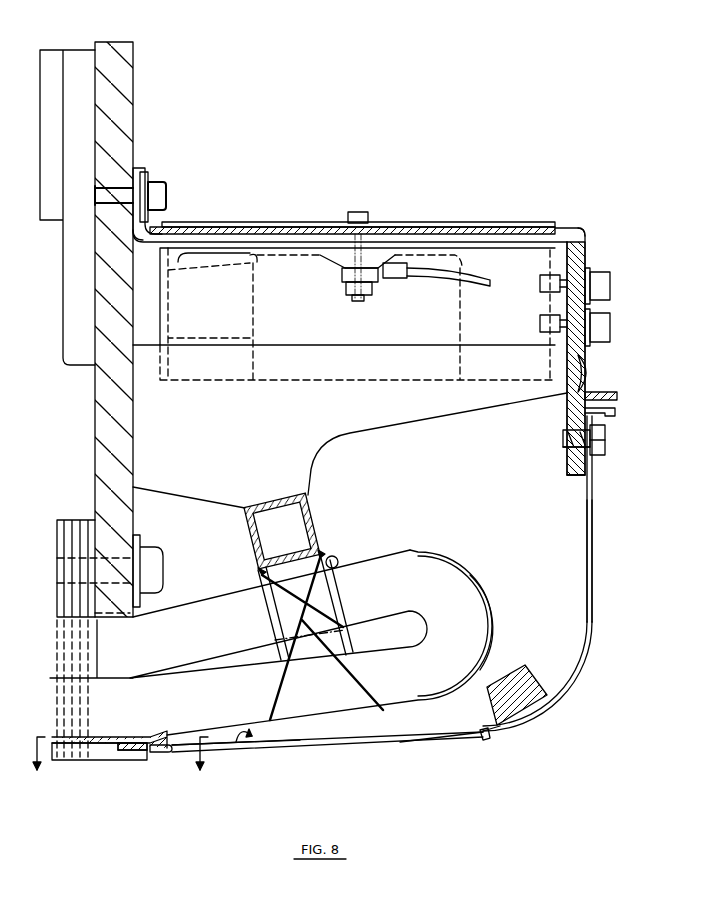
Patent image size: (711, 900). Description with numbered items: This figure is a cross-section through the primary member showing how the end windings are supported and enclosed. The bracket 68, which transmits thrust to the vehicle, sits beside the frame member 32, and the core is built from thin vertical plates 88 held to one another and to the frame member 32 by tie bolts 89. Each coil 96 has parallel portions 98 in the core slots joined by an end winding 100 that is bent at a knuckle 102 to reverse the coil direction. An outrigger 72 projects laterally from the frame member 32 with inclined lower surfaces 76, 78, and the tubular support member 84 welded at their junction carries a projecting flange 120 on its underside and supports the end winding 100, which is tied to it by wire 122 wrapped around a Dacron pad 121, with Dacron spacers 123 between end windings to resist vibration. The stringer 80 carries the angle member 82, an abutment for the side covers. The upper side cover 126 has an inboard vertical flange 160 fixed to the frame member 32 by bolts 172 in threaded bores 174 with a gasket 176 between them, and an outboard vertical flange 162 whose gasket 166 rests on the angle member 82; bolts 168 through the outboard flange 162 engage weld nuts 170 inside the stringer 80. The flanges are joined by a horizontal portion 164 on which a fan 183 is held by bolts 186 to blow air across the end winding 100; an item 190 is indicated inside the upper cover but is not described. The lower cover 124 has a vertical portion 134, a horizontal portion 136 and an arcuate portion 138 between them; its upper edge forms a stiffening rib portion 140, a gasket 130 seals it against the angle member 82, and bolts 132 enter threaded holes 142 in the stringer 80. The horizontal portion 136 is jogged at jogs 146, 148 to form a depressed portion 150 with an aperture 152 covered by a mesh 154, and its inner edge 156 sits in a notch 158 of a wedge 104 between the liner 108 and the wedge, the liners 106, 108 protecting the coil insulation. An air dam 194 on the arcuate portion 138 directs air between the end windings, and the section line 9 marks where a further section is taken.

The bracket 68 is at (78, 58).
The frame member 32 is at (126, 100).
The inboard vertical flange 160 is at (150, 173).
The bolts 172 is at (167, 196).
The threaded bores 174 is at (130, 186).
The gasket 176 is at (140, 229).
The fan 183 is at (268, 218).
The horizontal portion 164 is at (471, 221).
The bolts 186 is at (347, 208).
The housing interior 190 is at (157, 370).
The outrigger 72 is at (268, 410).
The outboard vertical flange 162 is at (586, 241).
The upper side cover 126 is at (583, 222).
The bolts 168 is at (606, 328).
The weld nuts 170 is at (540, 320).
The gasket 166 is at (588, 372).
The angle member 82 is at (605, 395).
The stiffening rib portion 140 is at (612, 410).
The projecting flange 120 is at (607, 432).
The threaded holes 142 is at (564, 436).
The stringer 80 is at (566, 442).
The bolts 132 is at (598, 450).
The gasket 130 is at (580, 478).
The vertical portion 134 is at (586, 530).
The lower cover 124 is at (575, 684).
The lower surface 78 is at (410, 420).
The lower surface 76 is at (195, 505).
The tubular support member 84 is at (318, 521).
The Dacron pad 121 is at (338, 557).
The wire 122 is at (330, 610).
The Dacron spacers 123 is at (350, 637).
The bend 102 is at (450, 563).
The coil 96 is at (494, 600).
The end winding 100 is at (347, 708).
The air dam 194 is at (517, 668).
The plates 88 is at (68, 518).
The tie bolts 89 is at (168, 570).
The parallel portions 98 is at (62, 642).
The wedge member 104 is at (105, 756).
The liner 106 is at (162, 732).
The liner 108 is at (142, 751).
The notch 158 is at (125, 751).
The inner edge 156 is at (132, 752).
The jog 148 is at (165, 754).
The mesh 154 is at (400, 740).
The aperture 152 is at (283, 742).
The horizontal portion 136 is at (474, 741).
The jog 146 is at (486, 742).
The arcuate portion 138 is at (522, 729).
The depressed portion 150 is at (239, 746).
The section line 9- 9 is at (120, 763).